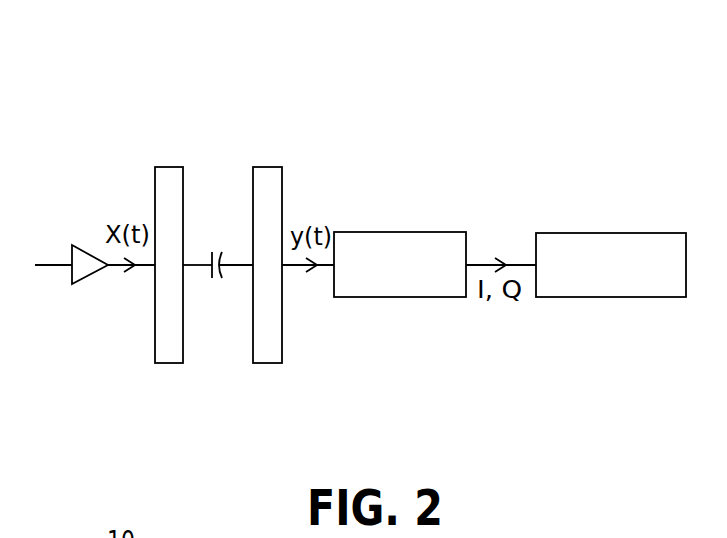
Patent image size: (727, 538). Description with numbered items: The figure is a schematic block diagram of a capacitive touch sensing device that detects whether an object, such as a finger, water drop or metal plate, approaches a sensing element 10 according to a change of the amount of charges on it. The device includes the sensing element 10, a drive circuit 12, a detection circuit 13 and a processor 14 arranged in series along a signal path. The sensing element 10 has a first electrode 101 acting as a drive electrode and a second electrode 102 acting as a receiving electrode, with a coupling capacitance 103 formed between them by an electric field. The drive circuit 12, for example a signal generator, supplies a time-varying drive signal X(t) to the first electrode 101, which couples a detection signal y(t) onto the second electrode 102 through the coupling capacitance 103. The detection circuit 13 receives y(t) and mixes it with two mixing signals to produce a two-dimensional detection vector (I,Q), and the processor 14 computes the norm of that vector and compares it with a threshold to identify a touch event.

The sensing element 10 is at (283, 78).
The first electrode 101 is at (171, 166).
The second electrode 102 is at (268, 166).
The coupling capacitance 103 is at (215, 285).
The drive circuit 12 is at (85, 243).
The detection circuit 13 is at (399, 232).
The processor 14 is at (614, 233).